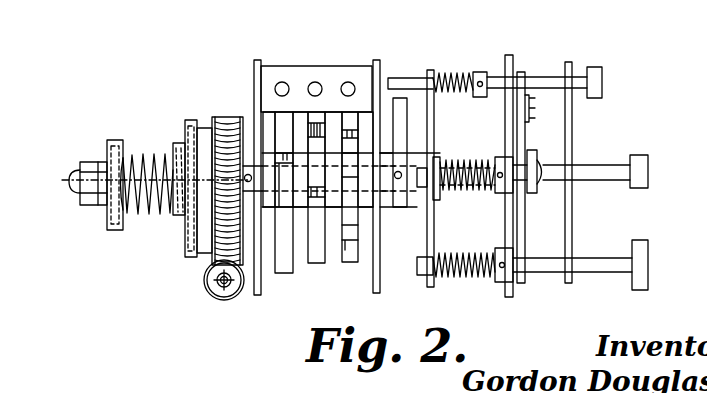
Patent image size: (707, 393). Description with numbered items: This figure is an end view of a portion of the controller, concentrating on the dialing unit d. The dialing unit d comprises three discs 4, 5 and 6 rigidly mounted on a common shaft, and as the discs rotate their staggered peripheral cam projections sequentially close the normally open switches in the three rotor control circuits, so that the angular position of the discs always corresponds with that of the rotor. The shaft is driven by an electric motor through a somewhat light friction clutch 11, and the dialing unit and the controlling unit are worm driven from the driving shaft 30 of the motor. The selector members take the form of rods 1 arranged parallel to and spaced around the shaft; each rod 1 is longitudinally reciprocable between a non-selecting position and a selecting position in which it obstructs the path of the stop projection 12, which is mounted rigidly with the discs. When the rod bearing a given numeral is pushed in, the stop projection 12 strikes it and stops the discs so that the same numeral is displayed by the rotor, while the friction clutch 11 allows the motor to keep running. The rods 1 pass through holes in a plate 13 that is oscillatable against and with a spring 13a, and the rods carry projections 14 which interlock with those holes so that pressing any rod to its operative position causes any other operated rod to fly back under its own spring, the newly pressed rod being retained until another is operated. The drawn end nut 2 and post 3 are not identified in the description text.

The selector member 1 is at (602, 83).
The cap nut 2 is at (72, 194).
The post 3 is at (260, 60).
The dialing unit d is at (390, 51).
The disc 4 is at (283, 268).
The disc 5 is at (318, 260).
The disc 6 is at (355, 258).
The friction clutch 11 is at (209, 269).
The stop projection 12 is at (402, 104).
The plate 13 is at (521, 72).
The spring 13a is at (532, 110).
The projection 14 is at (547, 167).
The driving shaft 30 is at (224, 284).